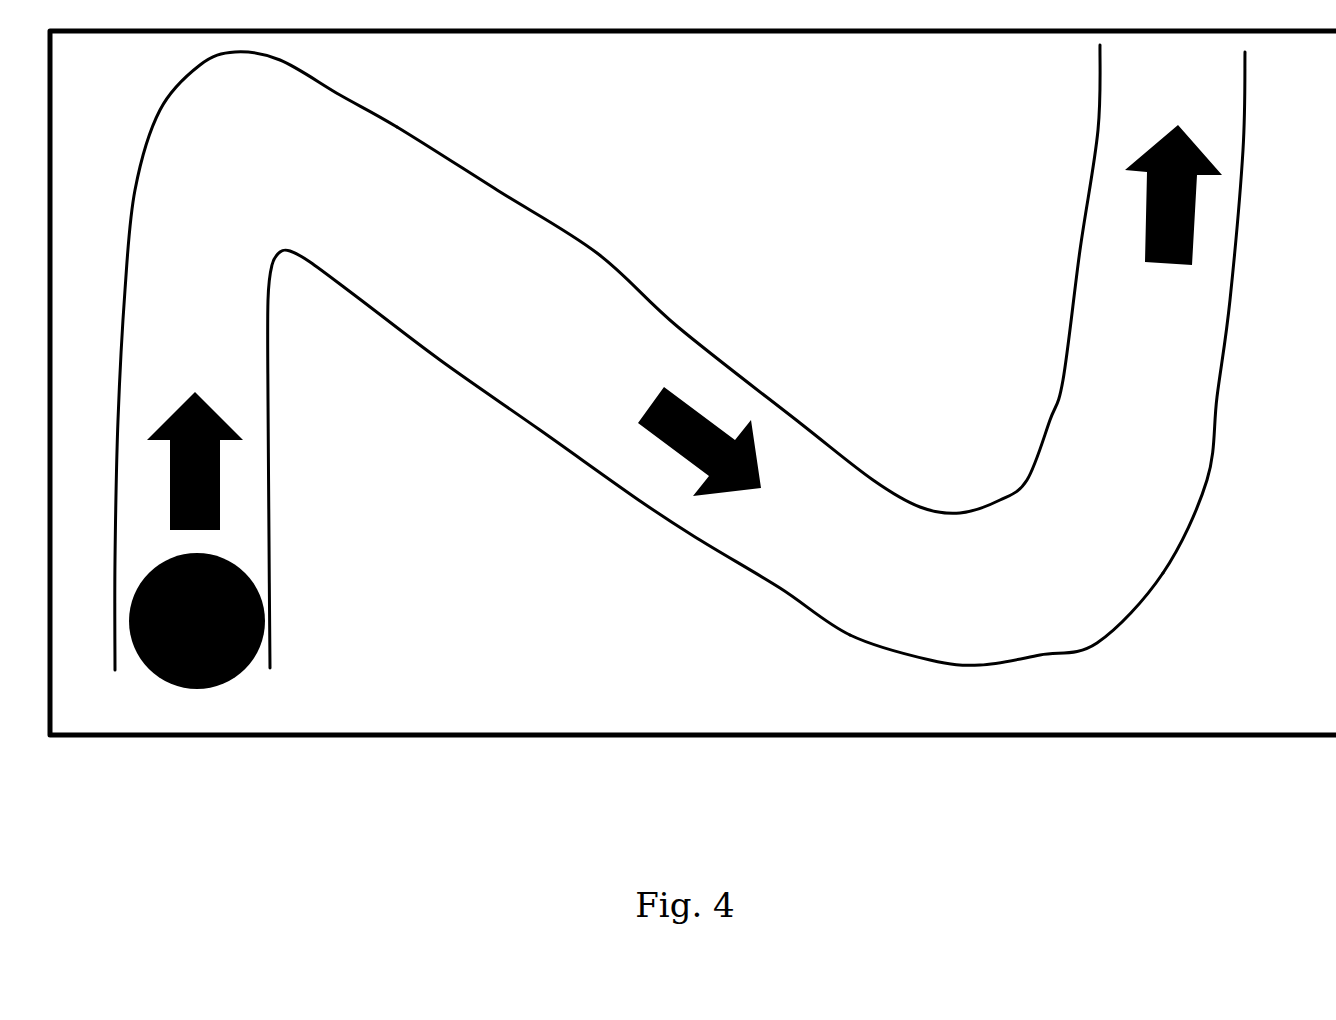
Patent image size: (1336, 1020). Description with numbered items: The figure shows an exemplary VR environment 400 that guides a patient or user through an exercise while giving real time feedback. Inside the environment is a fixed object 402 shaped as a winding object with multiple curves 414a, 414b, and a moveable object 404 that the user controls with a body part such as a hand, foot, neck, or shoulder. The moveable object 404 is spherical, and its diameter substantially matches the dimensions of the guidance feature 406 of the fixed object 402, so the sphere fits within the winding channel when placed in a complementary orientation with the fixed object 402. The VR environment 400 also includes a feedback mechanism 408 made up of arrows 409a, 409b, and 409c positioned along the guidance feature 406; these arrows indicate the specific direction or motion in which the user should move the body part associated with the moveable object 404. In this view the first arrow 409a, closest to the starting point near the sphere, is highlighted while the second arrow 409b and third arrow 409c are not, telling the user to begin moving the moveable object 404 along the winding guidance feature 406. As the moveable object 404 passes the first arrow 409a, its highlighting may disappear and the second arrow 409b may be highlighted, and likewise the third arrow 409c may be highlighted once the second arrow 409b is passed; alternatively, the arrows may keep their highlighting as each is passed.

The VR environment 400 is at (160, 23).
The fixed object 402 is at (678, 328).
The moveable object 404 is at (243, 628).
The guidance feature 406 is at (485, 303).
The feedback mechanism 408 is at (1262, 147).
The first arrow 409a is at (177, 399).
The second arrow 409b is at (673, 463).
The third arrow 409c is at (1175, 278).
The curve 414a is at (256, 361).
The curve 414b is at (1006, 619).